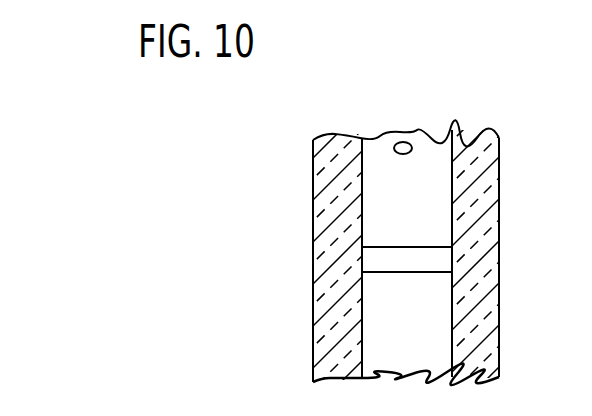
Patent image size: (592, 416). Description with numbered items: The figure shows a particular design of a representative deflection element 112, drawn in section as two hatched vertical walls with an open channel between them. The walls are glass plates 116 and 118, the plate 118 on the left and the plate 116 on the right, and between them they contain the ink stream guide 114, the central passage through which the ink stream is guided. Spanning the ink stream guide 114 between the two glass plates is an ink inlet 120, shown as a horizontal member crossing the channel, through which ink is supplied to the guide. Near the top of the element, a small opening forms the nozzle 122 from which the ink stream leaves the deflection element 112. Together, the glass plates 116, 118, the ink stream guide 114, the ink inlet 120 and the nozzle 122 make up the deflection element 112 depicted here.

The deflection element 112 is at (420, 128).
The ink stream guide 114 is at (437, 209).
The glass plate 116 is at (485, 344).
The glass plate 118 is at (318, 306).
The ink inlet 120 is at (440, 259).
The nozzle 122 is at (401, 142).